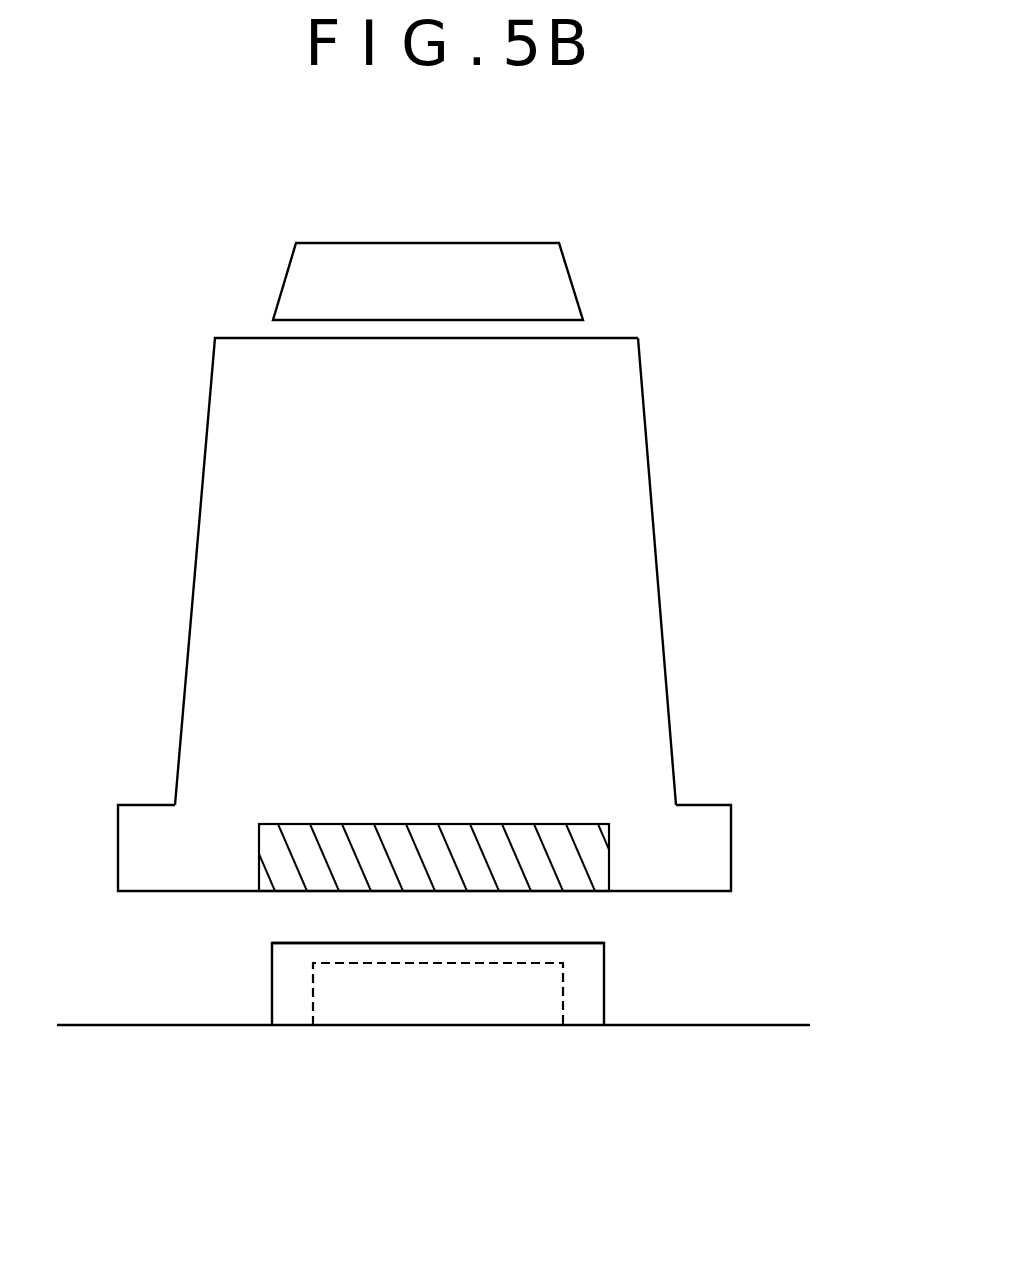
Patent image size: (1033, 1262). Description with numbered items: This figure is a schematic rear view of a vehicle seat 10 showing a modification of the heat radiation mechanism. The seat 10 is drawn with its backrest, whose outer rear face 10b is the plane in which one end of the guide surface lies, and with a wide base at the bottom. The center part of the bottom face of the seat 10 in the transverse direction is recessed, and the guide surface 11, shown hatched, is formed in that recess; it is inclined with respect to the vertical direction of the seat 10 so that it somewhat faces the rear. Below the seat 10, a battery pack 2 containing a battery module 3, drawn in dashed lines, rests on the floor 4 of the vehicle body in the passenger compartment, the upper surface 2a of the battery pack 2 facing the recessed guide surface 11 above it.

The seat 10 is at (627, 505).
The rear face of the seat 10b is at (605, 688).
The guide surface 11 is at (482, 853).
The battery pack 2 is at (272, 973).
The upper surface of semiconductor chip 2a is at (563, 943).
The battery module 3 is at (563, 990).
The floor 4 is at (665, 1025).